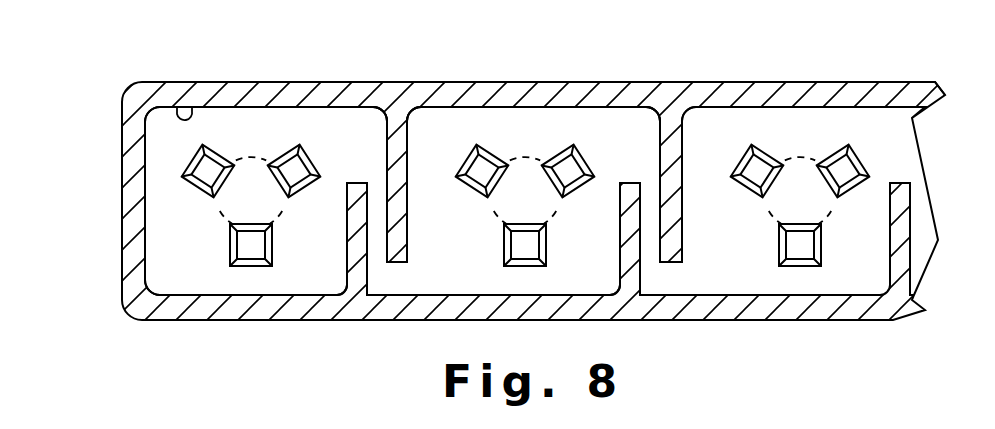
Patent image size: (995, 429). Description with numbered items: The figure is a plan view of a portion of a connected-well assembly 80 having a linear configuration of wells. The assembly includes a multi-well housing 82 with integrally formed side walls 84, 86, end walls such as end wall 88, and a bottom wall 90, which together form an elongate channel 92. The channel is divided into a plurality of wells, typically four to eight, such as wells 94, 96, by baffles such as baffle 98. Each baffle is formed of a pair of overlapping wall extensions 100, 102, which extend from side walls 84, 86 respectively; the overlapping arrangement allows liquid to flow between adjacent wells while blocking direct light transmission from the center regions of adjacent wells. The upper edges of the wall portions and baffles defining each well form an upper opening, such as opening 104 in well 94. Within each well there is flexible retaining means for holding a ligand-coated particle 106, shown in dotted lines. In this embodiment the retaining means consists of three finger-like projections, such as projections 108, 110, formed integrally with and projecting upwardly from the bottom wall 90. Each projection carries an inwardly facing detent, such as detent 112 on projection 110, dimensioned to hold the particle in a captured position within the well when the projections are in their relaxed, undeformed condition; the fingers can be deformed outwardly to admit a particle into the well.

The assembly 80 is at (590, 83).
The multi-well housing 82 is at (683, 98).
The side wall 84 is at (836, 97).
The side wall 86 is at (782, 312).
The end wall 88 is at (126, 234).
The bottom wall 90 is at (472, 247).
The elongate channel 92 is at (252, 118).
The well 94 is at (190, 277).
The well 96 is at (473, 122).
The baffle 98 is at (382, 141).
The wall extension 100 is at (395, 260).
The wall extension 102 is at (347, 230).
The upper opening 104 is at (176, 107).
The ligand-coated particle 106 is at (222, 211).
The finger-like projection 108 is at (252, 252).
The finger-like projection 110 is at (300, 140).
The detent 112 is at (521, 187).